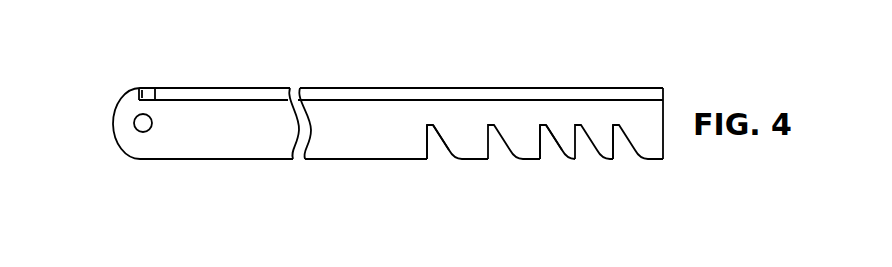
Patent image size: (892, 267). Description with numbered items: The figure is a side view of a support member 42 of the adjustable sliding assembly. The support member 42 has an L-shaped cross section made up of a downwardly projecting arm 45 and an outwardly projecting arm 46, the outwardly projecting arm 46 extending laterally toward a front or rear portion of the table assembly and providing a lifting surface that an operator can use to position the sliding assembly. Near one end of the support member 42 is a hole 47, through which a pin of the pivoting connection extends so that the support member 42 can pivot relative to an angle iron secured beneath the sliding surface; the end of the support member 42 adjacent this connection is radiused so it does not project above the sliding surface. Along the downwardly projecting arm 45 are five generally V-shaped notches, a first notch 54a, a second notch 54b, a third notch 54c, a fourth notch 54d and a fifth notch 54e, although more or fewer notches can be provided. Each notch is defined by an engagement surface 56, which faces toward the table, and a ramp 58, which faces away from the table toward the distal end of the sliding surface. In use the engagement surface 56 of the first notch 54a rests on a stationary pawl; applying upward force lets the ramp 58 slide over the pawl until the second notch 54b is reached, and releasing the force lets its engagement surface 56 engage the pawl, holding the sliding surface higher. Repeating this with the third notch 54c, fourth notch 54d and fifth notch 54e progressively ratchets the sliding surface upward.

The support member 42 is at (331, 48).
The downwardly projecting arm 45 is at (185, 142).
The outwardly projecting arm 46 is at (187, 94).
The hole 47 is at (134, 123).
The first notch 54a is at (440, 176).
The second notch 54b is at (508, 176).
The third notch 54c is at (558, 177).
The fourth notch 54d is at (602, 178).
The fifth notch 54e is at (645, 179).
The engagement surface 56 is at (424, 141).
The ramp 58 is at (449, 141).